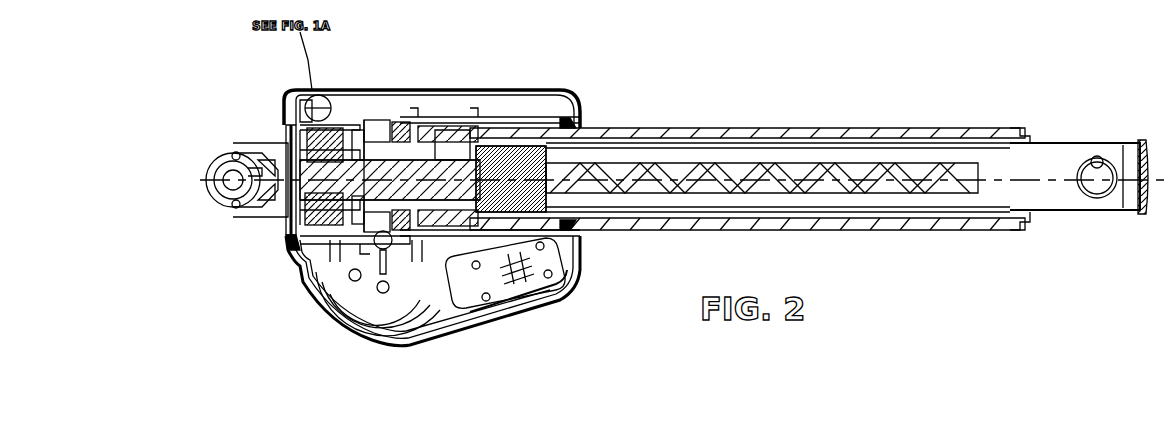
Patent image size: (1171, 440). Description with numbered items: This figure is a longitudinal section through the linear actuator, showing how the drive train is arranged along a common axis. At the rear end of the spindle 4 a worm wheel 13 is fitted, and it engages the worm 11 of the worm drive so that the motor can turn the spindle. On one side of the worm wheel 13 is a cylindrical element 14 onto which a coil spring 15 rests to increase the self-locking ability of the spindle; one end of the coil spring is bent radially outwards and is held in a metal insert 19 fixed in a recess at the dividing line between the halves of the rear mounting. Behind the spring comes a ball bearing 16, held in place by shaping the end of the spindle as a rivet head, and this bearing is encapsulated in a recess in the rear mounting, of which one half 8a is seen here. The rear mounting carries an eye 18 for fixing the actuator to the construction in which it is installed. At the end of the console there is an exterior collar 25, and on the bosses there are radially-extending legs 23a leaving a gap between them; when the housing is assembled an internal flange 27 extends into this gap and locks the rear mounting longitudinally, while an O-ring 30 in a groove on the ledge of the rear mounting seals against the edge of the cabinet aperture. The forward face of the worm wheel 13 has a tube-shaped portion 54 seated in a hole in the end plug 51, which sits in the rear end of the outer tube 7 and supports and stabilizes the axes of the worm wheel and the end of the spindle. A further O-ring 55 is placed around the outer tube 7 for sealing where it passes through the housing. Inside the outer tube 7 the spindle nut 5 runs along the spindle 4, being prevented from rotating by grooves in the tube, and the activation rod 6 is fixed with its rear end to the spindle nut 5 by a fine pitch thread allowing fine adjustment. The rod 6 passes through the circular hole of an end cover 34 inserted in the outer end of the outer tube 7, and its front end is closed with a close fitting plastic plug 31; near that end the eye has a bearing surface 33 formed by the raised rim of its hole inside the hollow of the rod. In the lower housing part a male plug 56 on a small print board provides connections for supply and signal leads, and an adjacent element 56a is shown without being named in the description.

The spindle 4 is at (604, 168).
The spindle nut 5 is at (578, 143).
The activation rod 6 is at (1050, 143).
The outer tube 7 is at (790, 130).
The rear mounting half 8a is at (215, 208).
The worm 11 is at (320, 306).
The worm wheel 13 is at (398, 122).
The cylindrical element 14 is at (286, 238).
The coil spring 15 is at (312, 276).
The ball bearing 16 is at (288, 120).
The eye 18 is at (230, 172).
The metal insert 19 is at (352, 128).
The radially-extending legs 23a is at (352, 96).
The exterior collar 25 is at (304, 110).
The internal flange 27 is at (318, 96).
The O-ring 30 is at (284, 122).
The plastic plug 31 is at (1145, 152).
The bearing surface 33 is at (1090, 160).
The end cover 34 is at (1022, 128).
The end plug 51 is at (455, 150).
The tube-shaped portion 54 is at (455, 92).
The O-ring 55 is at (572, 120).
The male plug 56 is at (572, 262).
The cover plate edge 56a is at (560, 292).